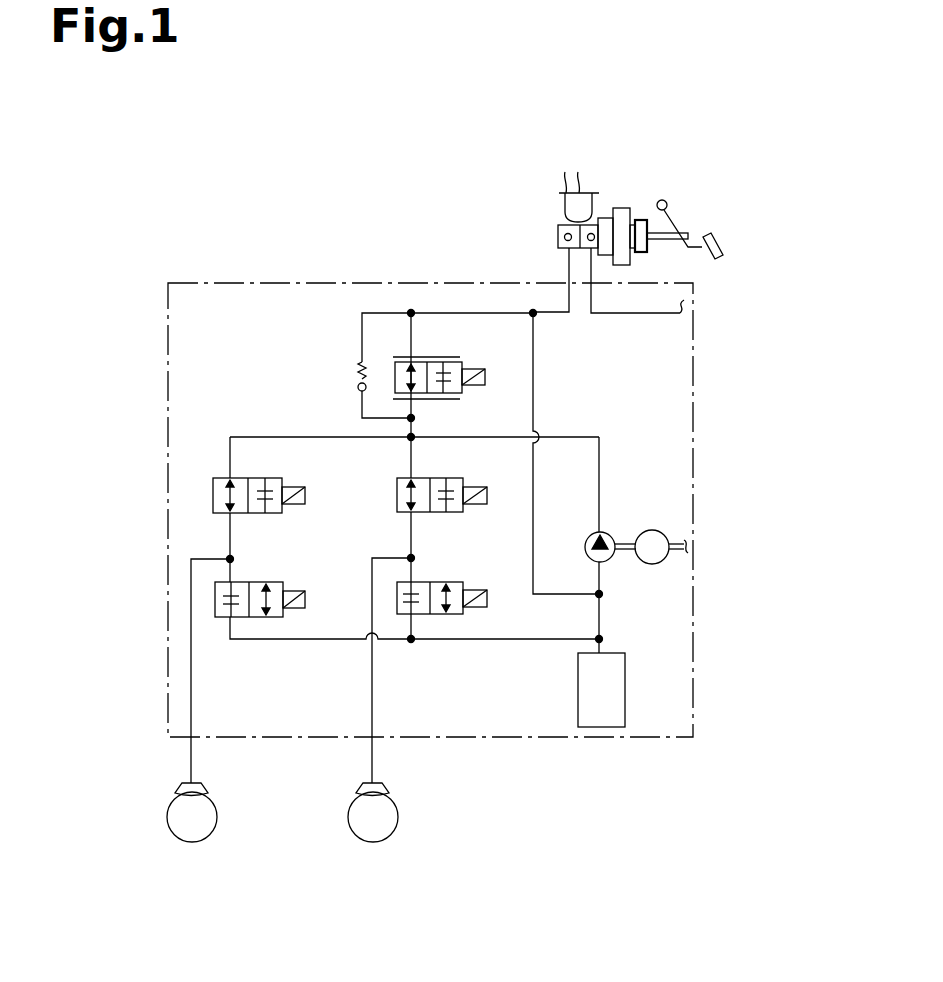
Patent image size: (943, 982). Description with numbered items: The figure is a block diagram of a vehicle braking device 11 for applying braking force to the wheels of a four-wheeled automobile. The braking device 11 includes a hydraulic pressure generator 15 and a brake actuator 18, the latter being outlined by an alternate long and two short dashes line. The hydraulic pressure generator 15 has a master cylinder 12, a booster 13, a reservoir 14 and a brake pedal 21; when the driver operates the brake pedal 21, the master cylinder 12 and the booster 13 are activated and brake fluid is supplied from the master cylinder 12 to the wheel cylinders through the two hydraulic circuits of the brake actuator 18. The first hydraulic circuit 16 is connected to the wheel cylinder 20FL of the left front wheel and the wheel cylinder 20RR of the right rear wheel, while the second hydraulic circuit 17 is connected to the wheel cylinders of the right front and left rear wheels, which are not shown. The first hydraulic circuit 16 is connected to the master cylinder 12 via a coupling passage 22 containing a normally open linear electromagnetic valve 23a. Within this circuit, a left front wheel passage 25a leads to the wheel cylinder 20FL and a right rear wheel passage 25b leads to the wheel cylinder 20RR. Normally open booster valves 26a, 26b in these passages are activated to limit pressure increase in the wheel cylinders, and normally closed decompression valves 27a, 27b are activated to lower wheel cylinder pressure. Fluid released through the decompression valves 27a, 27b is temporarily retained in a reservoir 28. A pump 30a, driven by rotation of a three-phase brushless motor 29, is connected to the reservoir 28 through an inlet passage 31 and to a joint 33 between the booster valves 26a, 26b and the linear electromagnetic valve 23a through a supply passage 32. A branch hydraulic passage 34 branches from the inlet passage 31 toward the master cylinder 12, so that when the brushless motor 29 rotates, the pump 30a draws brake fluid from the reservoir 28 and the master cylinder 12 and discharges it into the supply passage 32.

The braking device 11 is at (232, 192).
The master cylinder 12 is at (558, 228).
The booster 13 is at (620, 215).
The reservoir 14 is at (569, 176).
The hydraulic pressure generator 15 is at (548, 200).
The first hydraulic circuit 16 is at (341, 419).
The second hydraulic circuit 17 is at (660, 315).
The brake actuator 18 is at (250, 283).
The wheel cylinder of the right rear wheel 20RR is at (198, 786).
The wheel cylinder of the left front wheel 20FL is at (378, 786).
The brake pedal 21 is at (716, 260).
The coupling passage 22 is at (556, 314).
The linear electromagnetic valve 23a is at (385, 330).
The left front wheel passage 25a is at (409, 456).
The right rear wheel passage 25b is at (230, 451).
The booster valve 26a is at (468, 460).
The booster valve 26b is at (256, 478).
The decompression valve 27a is at (456, 582).
The decompression valve 27b is at (278, 569).
The reservoir 28 is at (578, 698).
The brushless motor 29 is at (654, 530).
The pump 30a is at (590, 534).
The inlet passage 31 is at (602, 594).
The supply passage 32 is at (603, 456).
The joint 33 is at (418, 426).
The branch hydraulic passage 34 is at (543, 538).